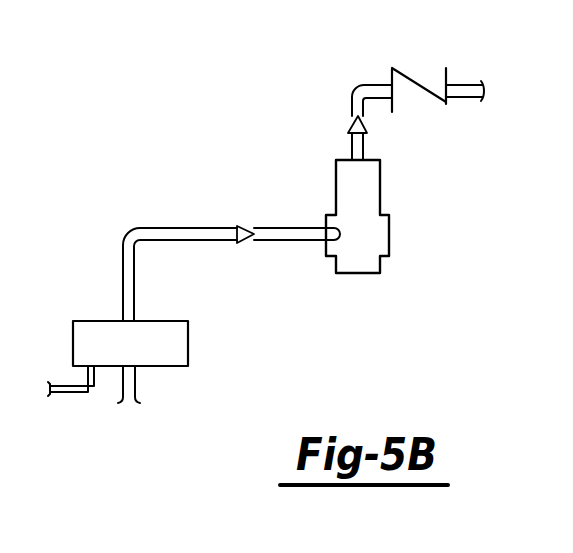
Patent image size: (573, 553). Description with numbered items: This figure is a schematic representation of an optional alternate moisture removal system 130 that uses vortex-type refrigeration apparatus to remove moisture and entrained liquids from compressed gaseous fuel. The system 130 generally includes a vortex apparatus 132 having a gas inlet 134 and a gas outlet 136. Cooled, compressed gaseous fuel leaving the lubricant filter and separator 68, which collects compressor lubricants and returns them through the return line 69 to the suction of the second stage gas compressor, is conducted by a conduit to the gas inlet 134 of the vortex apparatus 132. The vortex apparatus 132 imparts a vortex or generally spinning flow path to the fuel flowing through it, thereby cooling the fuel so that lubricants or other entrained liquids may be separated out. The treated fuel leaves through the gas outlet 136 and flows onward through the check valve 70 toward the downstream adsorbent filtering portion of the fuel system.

The alternate moisture removal system 130 is at (241, 190).
The lubricant filter and separator 68 is at (146, 352).
The return line 69 is at (70, 394).
The gas inlet 134 is at (275, 241).
The vortex apparatus 132 is at (382, 193).
The gas outlet 136 is at (365, 143).
The check valve 70 is at (408, 78).